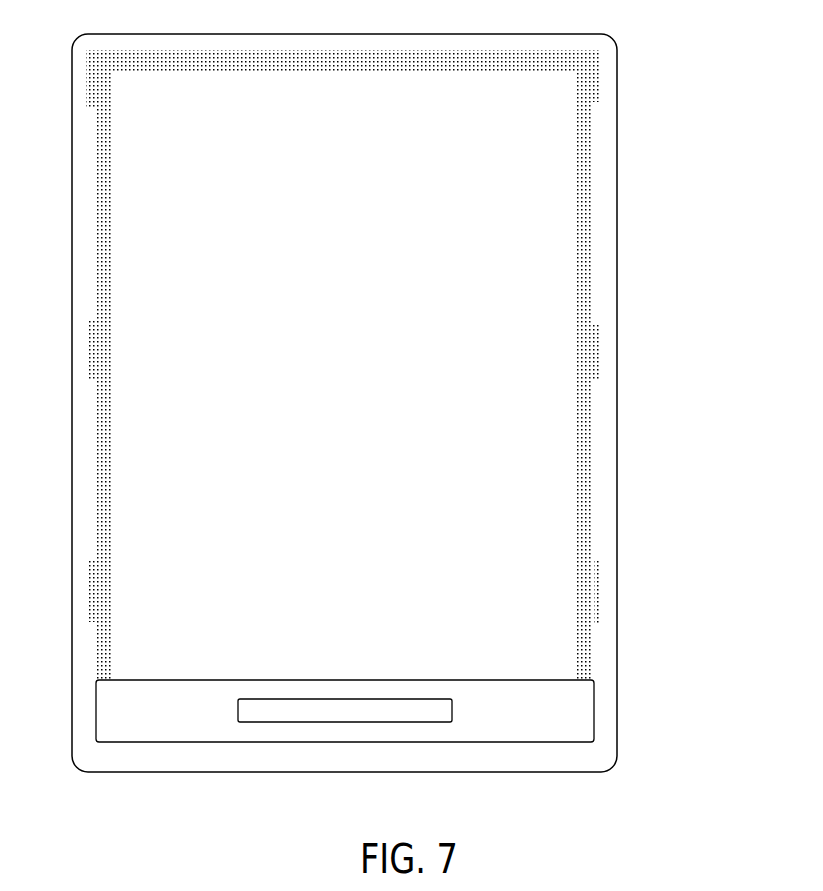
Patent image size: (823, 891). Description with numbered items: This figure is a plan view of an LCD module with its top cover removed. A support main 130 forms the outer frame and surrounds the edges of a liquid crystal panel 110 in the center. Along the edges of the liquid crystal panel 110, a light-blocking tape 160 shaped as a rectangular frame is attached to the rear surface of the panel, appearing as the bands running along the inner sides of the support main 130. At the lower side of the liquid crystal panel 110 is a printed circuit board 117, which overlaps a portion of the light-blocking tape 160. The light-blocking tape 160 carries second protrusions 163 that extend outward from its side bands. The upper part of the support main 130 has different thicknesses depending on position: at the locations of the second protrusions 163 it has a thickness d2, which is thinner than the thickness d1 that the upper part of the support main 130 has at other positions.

The support main 130 is at (621, 177).
The light-blocking tape 160 is at (588, 407).
The second protrusions 163 is at (600, 347).
The liquid crystal panel 110 is at (505, 592).
The printed circuit board 117 is at (560, 713).
The thickness d1 is at (108, 283).
The thickness d2 is at (98, 350).